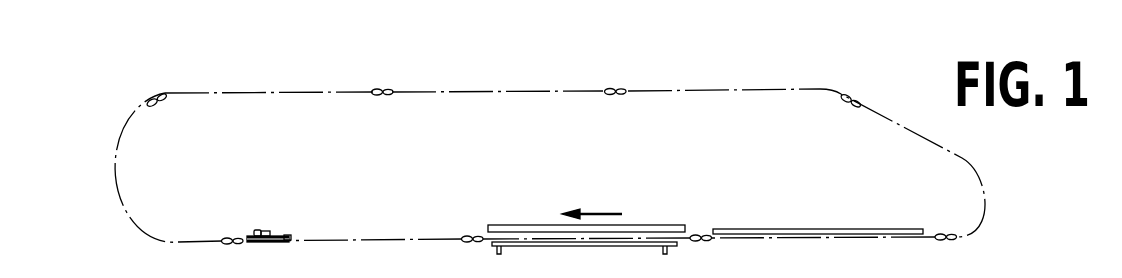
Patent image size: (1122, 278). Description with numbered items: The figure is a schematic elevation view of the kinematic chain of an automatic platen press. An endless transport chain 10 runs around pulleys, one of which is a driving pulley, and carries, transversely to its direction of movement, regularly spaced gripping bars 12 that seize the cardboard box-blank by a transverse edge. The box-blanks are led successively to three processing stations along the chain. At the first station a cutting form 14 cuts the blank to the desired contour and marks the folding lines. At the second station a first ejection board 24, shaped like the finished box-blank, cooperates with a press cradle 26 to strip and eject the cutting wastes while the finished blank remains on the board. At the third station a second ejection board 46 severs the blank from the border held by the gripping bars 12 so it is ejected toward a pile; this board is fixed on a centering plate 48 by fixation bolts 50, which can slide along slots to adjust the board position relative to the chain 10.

The endless transport chain 10 is at (114, 181).
The gripping bars 12 is at (160, 97).
The cutting form 14 is at (823, 230).
The first ejection board 24 is at (539, 244).
The press cradle 26 is at (655, 228).
The second ejection board 46 is at (282, 234).
The centering plate 48 is at (267, 232).
The fixation bolts 50 is at (252, 233).